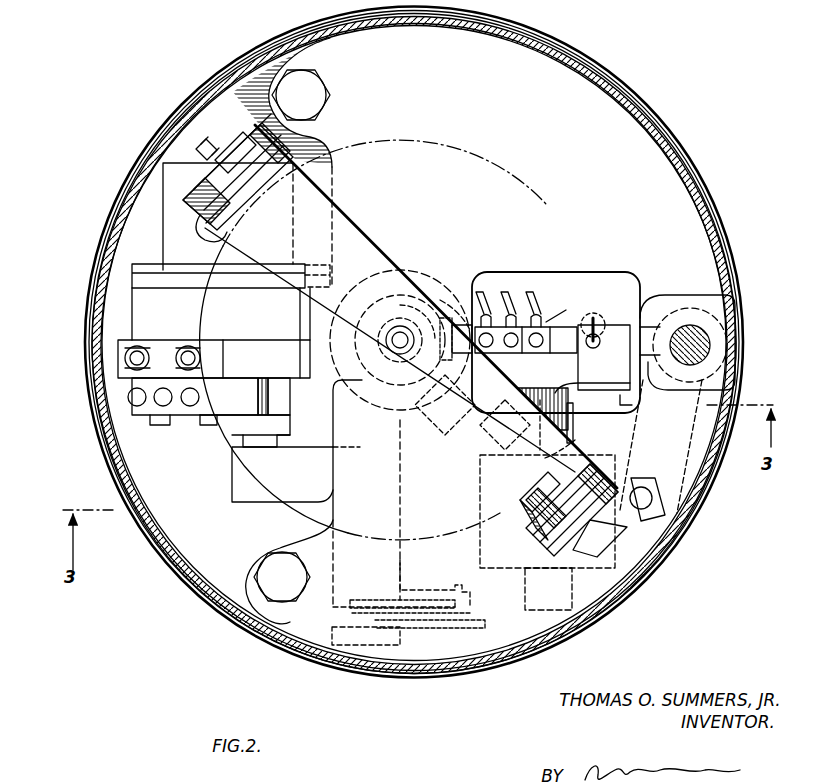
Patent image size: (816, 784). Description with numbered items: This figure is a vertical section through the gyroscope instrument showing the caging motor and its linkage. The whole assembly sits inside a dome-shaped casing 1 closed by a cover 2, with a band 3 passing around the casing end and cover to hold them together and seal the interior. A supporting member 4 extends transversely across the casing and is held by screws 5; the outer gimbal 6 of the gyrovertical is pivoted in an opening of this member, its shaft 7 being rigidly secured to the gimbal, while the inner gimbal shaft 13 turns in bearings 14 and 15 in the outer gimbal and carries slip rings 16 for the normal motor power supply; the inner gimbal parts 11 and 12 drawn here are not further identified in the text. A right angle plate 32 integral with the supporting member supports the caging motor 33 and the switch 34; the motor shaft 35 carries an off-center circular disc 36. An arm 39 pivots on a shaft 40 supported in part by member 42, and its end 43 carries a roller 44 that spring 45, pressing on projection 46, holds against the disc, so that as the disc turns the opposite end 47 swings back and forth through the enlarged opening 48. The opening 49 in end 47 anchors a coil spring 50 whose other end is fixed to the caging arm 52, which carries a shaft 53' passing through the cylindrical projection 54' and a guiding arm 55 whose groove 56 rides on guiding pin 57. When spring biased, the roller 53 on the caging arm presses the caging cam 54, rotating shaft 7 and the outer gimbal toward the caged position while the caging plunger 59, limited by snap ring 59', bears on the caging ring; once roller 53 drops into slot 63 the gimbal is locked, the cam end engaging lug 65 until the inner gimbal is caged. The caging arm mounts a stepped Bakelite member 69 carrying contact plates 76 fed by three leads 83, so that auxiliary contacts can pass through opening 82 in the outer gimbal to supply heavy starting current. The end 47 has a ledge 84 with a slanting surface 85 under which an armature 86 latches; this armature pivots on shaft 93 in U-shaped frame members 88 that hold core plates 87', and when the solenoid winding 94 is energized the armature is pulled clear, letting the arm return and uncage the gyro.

The casing 1 is at (664, 134).
The cover 2 is at (212, 110).
The band 3 is at (706, 190).
The supporting member 4 is at (548, 84).
The screws 5 is at (313, 89).
The outer gimbal 6 is at (376, 247).
The shaft 7 is at (304, 502).
The circular path 11 is at (432, 142).
The motor unit 12 is at (560, 506).
The shaft 13 is at (243, 198).
The bearing 14 is at (540, 548).
The bearing 15 is at (220, 176).
The slip rings 16 is at (214, 150).
The right angle plate 32 is at (300, 357).
The caging motor 33 is at (172, 232).
The switch 34 is at (190, 412).
The shaft 35 is at (268, 393).
The circular disc 36 is at (290, 422).
The arm 39 is at (408, 493).
The shaft 40 is at (362, 625).
The member 42 is at (392, 640).
The end of arm 43 is at (240, 479).
The roller 44 is at (287, 441).
The spring 45 is at (466, 628).
The projection 46 is at (438, 600).
The end of arm 47 is at (640, 324).
The enlarged opening 48 is at (633, 276).
The opening 49 is at (598, 345).
The coil spring 50 is at (605, 318).
The caging arm 52 is at (595, 316).
The roller 53 is at (456, 315).
The shaft 53' is at (715, 345).
The caging cam 54 is at (450, 286).
The cylindrical projection 54' is at (687, 330).
The guiding arm 55 is at (690, 480).
The groove 56 is at (652, 500).
The guiding pin 57 is at (662, 515).
The caging plunger 59 is at (400, 340).
The snap ring 59' is at (410, 354).
The slot 63 is at (445, 405).
The lug 65 is at (610, 520).
The stepped Bakelite member 69 is at (556, 316).
The contact plate 76 is at (538, 309).
The opening 82 is at (490, 455).
The leads 83 is at (520, 296).
The ledge 84 is at (630, 406).
The slanting surface 85 is at (565, 390).
The armature 86 is at (548, 386).
The plates 87' is at (531, 525).
The U-shaped frame members 88 is at (525, 405).
The shaft 93 is at (573, 421).
The solenoid winding 94 is at (475, 500).